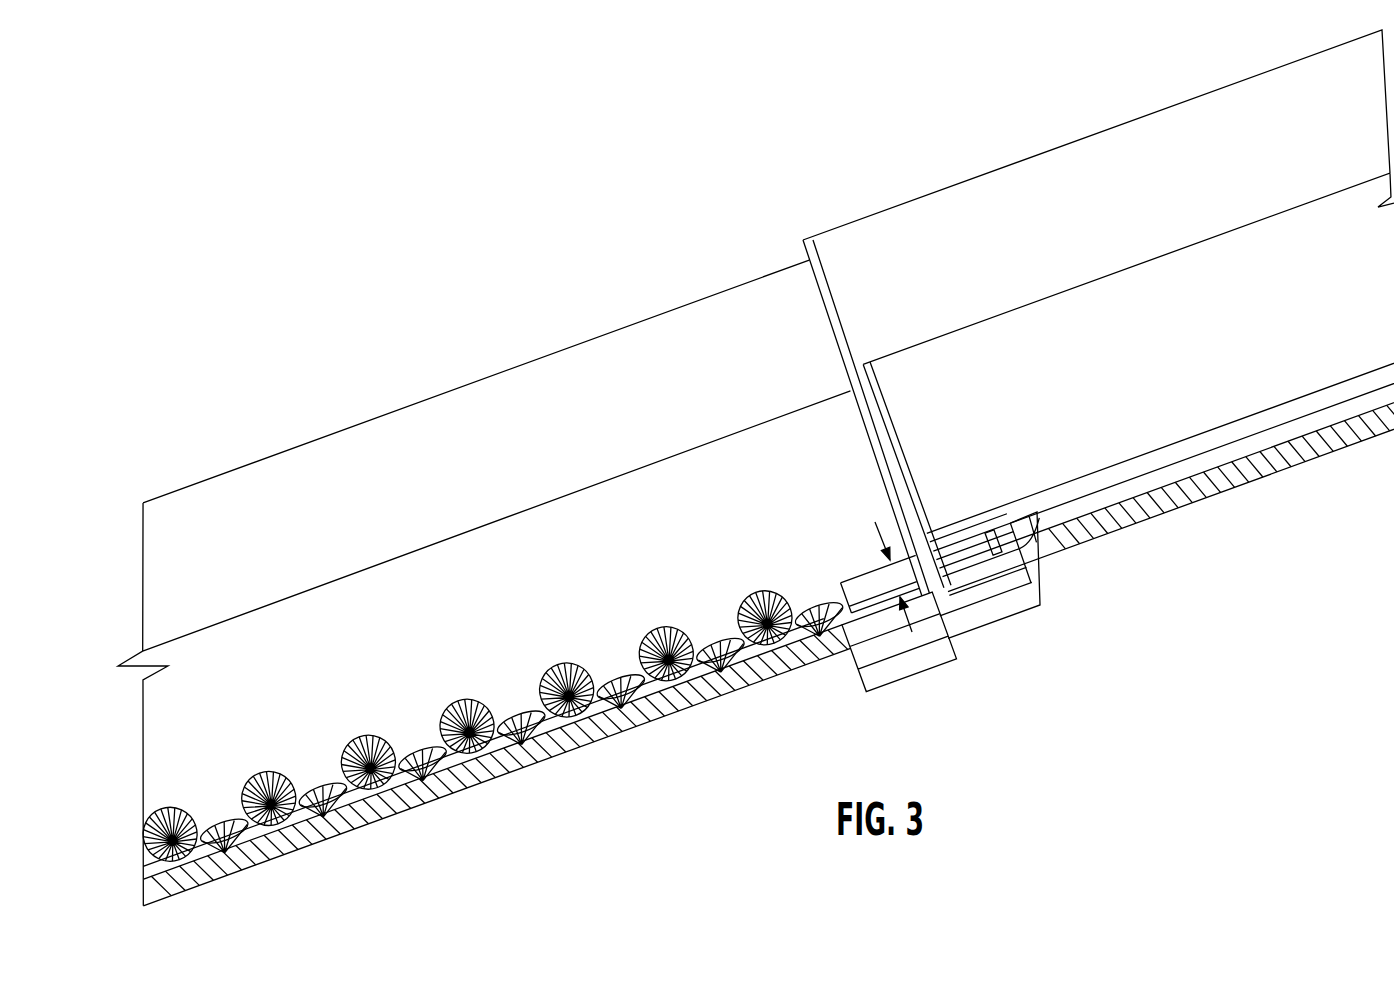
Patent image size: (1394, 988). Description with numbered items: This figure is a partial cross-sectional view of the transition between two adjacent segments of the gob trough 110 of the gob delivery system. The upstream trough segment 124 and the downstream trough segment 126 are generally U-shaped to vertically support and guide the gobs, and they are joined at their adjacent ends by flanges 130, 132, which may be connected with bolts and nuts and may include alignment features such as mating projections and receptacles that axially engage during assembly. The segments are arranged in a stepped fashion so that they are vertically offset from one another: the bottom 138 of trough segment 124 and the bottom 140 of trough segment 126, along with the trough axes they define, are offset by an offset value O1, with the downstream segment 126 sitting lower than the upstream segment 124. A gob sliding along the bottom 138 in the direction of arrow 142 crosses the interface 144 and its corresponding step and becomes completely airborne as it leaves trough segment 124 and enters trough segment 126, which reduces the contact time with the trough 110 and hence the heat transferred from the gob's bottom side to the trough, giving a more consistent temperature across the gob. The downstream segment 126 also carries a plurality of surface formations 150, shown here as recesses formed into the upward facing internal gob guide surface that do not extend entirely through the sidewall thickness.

The gob trough 110 is at (708, 185).
The trough segment 124 is at (1230, 473).
The trough segment 126 is at (493, 787).
The flange 130 is at (908, 662).
The flange 132 is at (1007, 612).
The bottom 138 is at (1088, 487).
The bottom 140 is at (857, 598).
The arrow 142 is at (1245, 348).
The interface 144 is at (940, 578).
The surface formations 150 is at (375, 730).
The offset value O1 is at (907, 522).